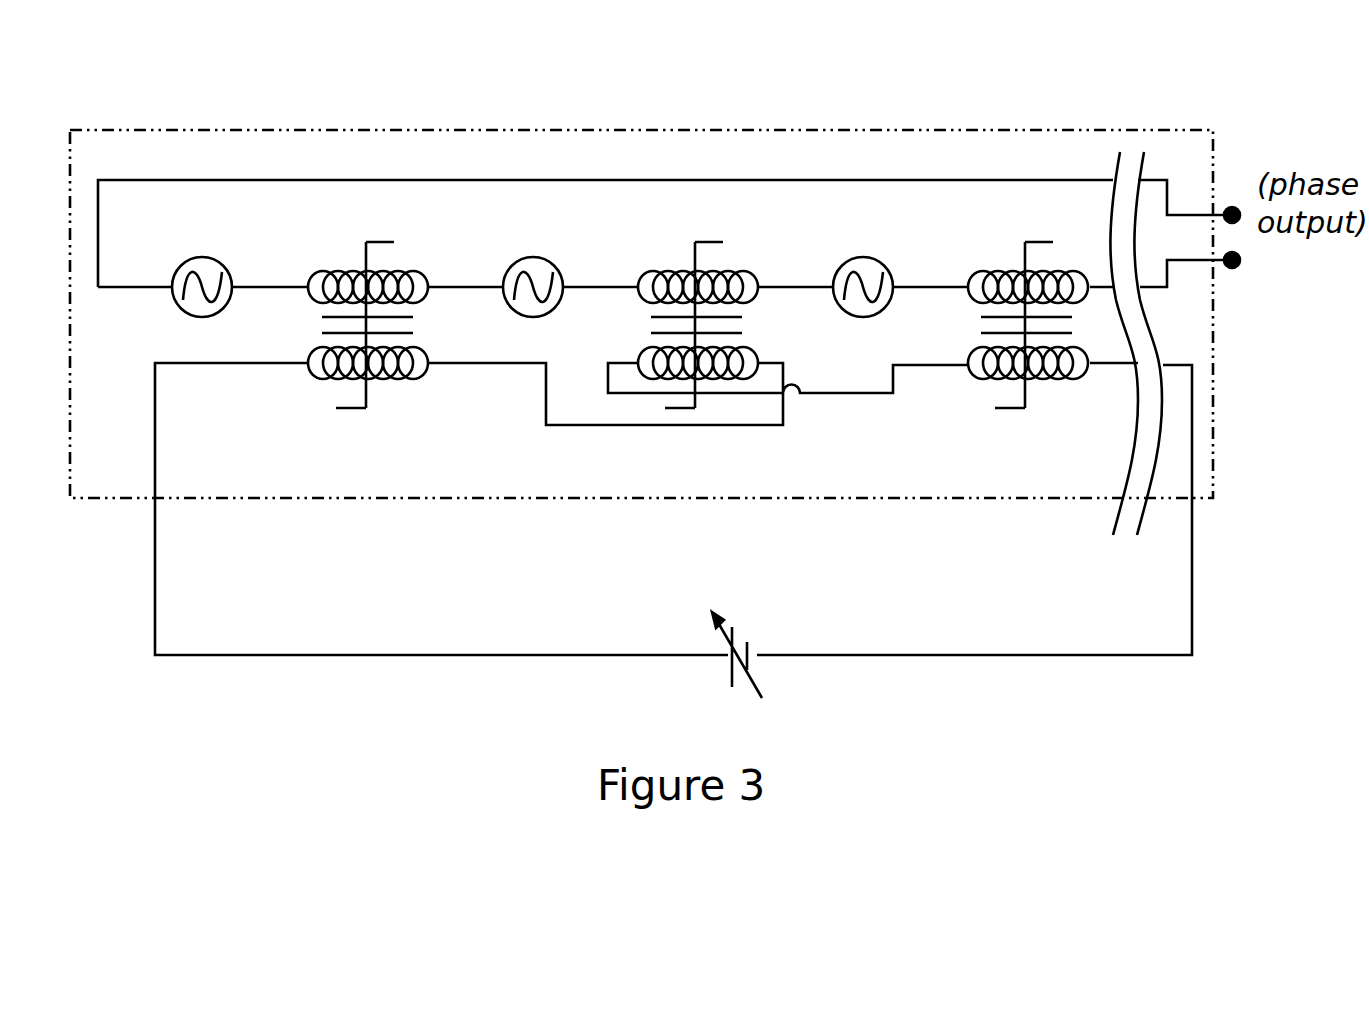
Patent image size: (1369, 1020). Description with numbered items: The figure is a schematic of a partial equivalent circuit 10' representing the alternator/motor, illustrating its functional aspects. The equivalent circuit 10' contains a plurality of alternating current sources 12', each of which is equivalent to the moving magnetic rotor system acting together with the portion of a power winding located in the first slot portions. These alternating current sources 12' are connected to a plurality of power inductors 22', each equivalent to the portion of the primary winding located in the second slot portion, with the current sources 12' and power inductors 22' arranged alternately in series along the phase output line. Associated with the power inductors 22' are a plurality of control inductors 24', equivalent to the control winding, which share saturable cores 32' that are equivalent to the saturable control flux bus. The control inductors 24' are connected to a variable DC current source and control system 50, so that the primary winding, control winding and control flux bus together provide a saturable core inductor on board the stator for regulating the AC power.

The equivalent circuit 10' is at (641, 293).
The alternating current sources 12' is at (507, 280).
The power inductors 22' is at (676, 273).
The control inductors 24' is at (676, 348).
The saturable cores 32' is at (720, 356).
The variable DC current source and control system 50 is at (711, 645).